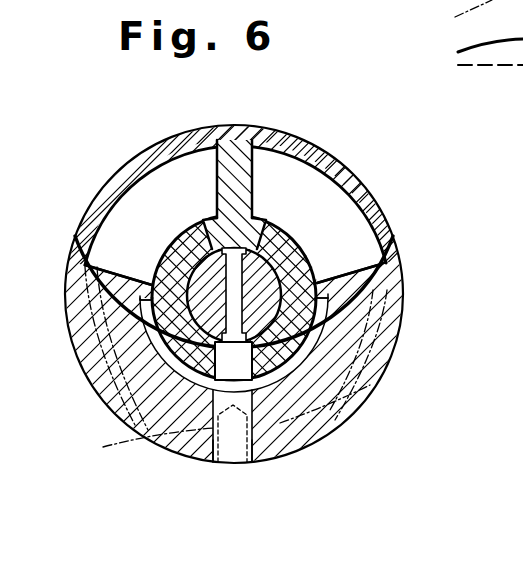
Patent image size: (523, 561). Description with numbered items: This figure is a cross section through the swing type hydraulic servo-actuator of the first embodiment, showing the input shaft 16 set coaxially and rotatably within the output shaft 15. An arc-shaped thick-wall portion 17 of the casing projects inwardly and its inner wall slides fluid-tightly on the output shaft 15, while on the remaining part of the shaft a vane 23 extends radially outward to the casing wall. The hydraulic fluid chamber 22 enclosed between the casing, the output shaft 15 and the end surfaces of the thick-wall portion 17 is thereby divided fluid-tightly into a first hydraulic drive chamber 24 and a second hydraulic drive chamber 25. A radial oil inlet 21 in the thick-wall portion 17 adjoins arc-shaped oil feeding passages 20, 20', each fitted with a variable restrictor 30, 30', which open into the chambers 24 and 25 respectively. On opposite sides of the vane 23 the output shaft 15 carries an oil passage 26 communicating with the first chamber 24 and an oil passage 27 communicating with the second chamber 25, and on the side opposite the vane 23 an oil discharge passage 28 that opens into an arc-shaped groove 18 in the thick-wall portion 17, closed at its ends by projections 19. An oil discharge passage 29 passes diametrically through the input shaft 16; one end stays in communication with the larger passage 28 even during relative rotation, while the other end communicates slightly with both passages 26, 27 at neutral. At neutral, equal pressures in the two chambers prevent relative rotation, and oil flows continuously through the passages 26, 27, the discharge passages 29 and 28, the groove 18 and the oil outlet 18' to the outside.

The output shaft 15 is at (183, 245).
The input shaft 16 is at (263, 270).
The thick-wall portion 17 is at (110, 300).
The groove 18 is at (261, 280).
The oil outlet 18' is at (255, 488).
The projections 19 is at (146, 290).
The oil feeding passage 20 is at (394, 294).
The oil feeding passage 20' is at (159, 473).
The oil inlet 21 is at (227, 430).
The hydraulic fluid chamber 22 is at (315, 187).
The vane 23 is at (240, 155).
The first hydraulic drive chamber 24 is at (350, 212).
The second hydraulic drive chamber 25 is at (152, 185).
The oil passage 26 is at (262, 232).
The oil passage 27 is at (205, 228).
The oil discharge passage 28 is at (243, 358).
The oil discharge passage 29 is at (237, 303).
The variable restrictor 30 is at (333, 394).
The variable restrictor 30' is at (123, 375).